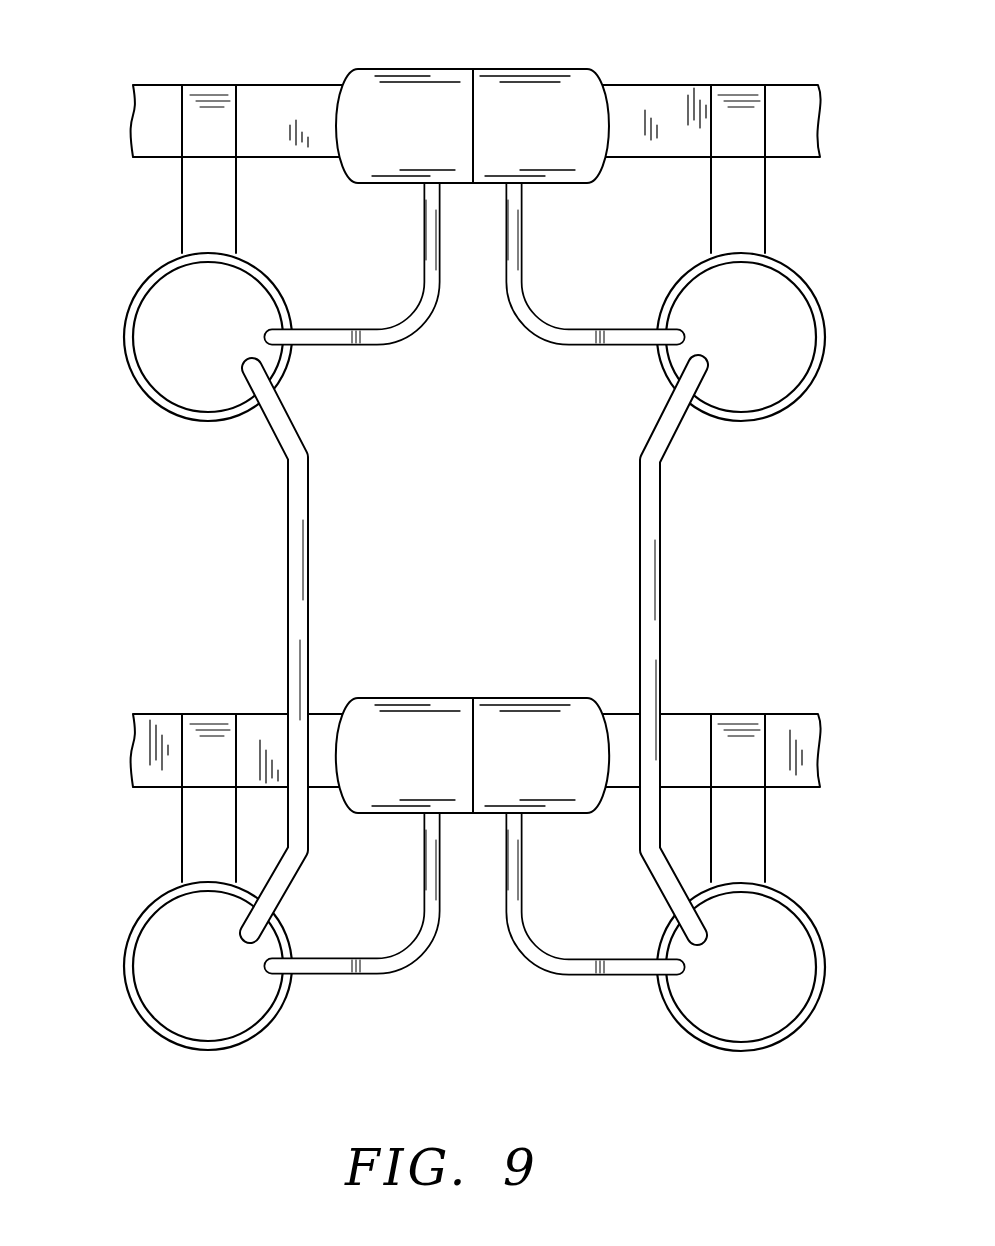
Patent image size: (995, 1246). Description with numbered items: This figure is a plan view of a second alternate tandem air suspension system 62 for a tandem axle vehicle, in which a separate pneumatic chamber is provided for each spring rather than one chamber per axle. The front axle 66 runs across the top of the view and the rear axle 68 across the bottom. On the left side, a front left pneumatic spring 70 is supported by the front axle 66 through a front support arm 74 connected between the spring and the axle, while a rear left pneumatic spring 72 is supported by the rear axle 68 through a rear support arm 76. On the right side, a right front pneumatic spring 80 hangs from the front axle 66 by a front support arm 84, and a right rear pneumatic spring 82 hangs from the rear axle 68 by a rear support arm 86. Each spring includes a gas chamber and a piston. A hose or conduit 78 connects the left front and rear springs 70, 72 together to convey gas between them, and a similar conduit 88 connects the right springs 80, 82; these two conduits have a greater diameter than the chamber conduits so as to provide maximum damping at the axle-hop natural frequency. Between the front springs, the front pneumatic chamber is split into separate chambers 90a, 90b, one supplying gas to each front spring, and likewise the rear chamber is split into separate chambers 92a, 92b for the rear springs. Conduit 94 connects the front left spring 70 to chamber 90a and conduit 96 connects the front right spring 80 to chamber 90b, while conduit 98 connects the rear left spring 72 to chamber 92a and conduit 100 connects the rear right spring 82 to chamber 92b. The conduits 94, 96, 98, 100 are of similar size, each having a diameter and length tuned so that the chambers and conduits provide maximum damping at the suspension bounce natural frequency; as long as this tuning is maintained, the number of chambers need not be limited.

The suspension system 62 is at (740, 518).
The front axle 66 is at (158, 108).
The rear axle 68 is at (176, 725).
The front left pneumatic spring 70 is at (180, 265).
The rear left pneumatic spring 72 is at (185, 893).
The front support arm 74 is at (217, 108).
The rear support arm 76 is at (185, 832).
The conduit 78 is at (310, 590).
The right front pneumatic spring 80 is at (775, 262).
The right rear pneumatic spring 82 is at (800, 905).
The front support arm 84 is at (766, 181).
The rear support arm 86 is at (768, 820).
The conduit 88 is at (638, 552).
The front pneumatic chamber 90a is at (392, 172).
The front pneumatic chamber 90b is at (495, 97).
The rear pneumatic chamber 92a is at (395, 700).
The rear pneumatic chamber 92b is at (510, 700).
The conduit 94 is at (400, 343).
The conduit 96 is at (535, 343).
The conduit 98 is at (400, 972).
The conduit 100 is at (548, 972).